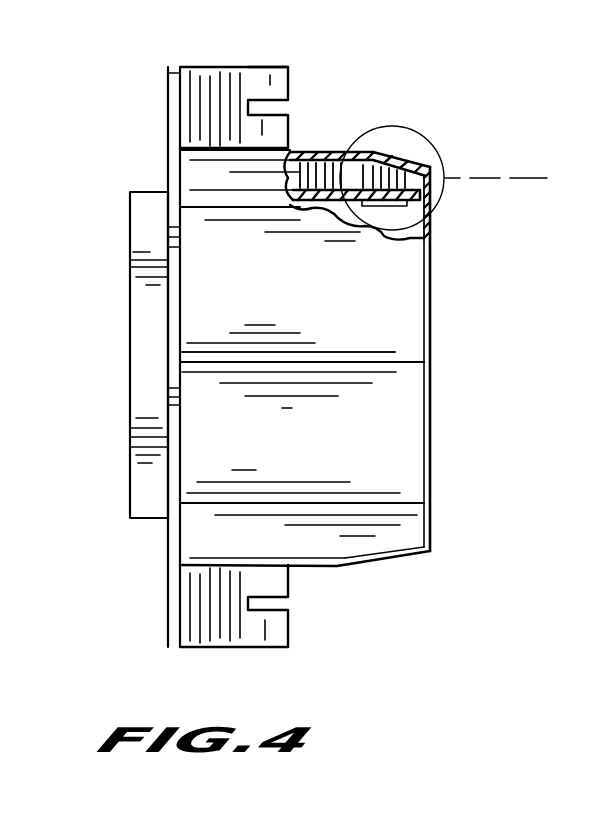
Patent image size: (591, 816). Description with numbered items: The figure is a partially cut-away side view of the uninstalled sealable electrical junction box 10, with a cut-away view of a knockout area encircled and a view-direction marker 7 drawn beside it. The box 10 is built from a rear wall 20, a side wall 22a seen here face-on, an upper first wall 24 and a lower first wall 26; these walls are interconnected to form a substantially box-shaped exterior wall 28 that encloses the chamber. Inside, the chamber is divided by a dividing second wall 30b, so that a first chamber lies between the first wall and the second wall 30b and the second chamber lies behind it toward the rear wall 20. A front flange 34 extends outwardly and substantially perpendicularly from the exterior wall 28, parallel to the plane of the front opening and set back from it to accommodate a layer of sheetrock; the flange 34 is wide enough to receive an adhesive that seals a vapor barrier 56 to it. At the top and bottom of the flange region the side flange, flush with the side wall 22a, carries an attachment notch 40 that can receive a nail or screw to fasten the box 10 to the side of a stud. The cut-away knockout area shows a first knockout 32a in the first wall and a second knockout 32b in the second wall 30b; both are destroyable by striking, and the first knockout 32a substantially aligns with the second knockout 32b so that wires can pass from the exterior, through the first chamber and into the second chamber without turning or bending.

The sealable electrical junction box 10 is at (205, 200).
The rear wall 20 is at (431, 463).
The side wall 22a is at (331, 455).
The upper first wall 24 is at (303, 150).
The lower first wall 26 is at (333, 568).
The exterior wall 28 is at (365, 325).
The second wall 30b is at (318, 190).
The first knockout 32a is at (400, 153).
The second knockout 32b is at (400, 183).
The front flange 34 is at (168, 580).
The attachment notch 40 is at (252, 98).
The vapor barrier 56 is at (288, 64).
The section indicator 7 is at (552, 188).